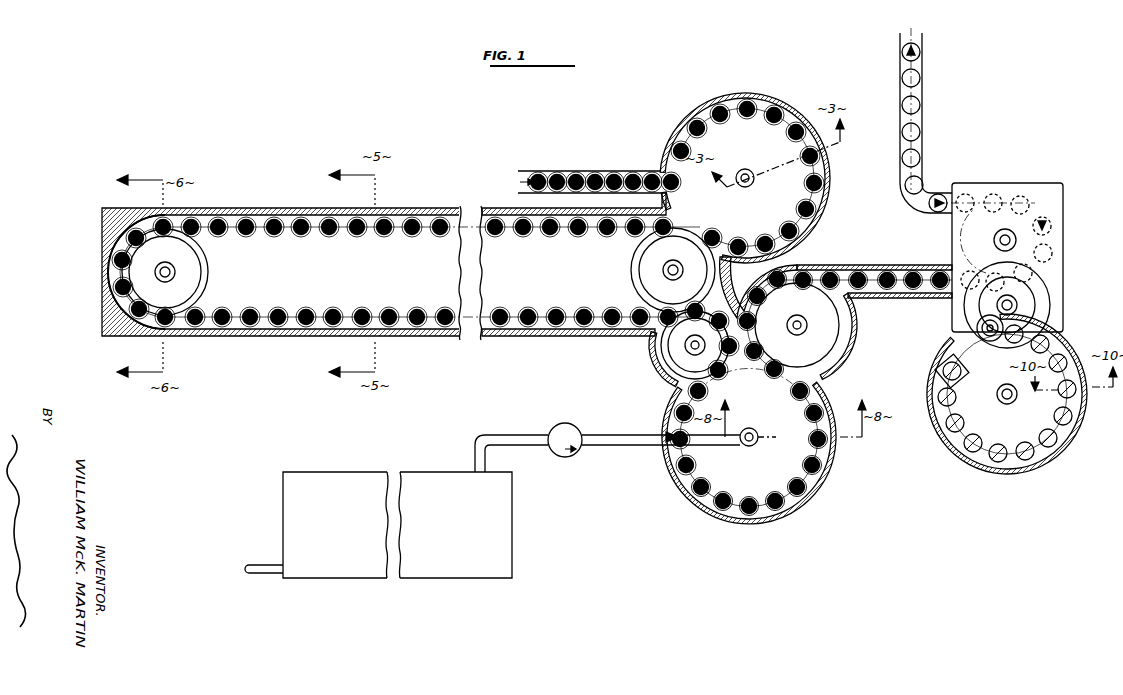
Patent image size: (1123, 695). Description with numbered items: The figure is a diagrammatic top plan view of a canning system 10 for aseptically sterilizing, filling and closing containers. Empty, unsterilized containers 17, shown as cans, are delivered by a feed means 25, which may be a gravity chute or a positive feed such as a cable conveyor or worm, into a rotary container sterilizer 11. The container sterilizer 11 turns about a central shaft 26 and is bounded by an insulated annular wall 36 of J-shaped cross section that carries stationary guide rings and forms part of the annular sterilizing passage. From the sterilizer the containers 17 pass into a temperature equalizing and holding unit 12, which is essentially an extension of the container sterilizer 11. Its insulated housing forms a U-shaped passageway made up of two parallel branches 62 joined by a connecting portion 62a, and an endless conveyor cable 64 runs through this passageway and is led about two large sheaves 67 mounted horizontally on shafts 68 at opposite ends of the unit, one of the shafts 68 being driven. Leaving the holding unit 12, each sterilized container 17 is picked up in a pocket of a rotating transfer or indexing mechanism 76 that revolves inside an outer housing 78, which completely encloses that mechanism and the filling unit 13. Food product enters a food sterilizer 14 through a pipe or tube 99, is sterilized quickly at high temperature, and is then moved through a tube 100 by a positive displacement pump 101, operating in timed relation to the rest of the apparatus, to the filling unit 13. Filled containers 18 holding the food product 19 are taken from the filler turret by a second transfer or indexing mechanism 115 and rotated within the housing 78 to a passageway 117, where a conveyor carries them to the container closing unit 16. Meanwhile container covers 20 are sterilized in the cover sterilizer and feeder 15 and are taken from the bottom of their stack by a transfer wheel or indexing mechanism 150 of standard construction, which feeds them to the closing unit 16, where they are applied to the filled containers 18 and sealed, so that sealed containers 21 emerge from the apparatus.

The canning system 10 is at (956, 112).
The container sterilizer 11 is at (784, 92).
The temperature equalizing and holding unit 12 is at (453, 207).
The filling unit 13 is at (672, 491).
The food sterilizer 14 is at (483, 580).
The cover sterilizer and feeder 15 is at (979, 476).
The container closing unit 16 is at (1057, 180).
The empty containers 17 is at (282, 314).
The filled containers 18 is at (858, 271).
The food product 19 is at (776, 492).
The container covers 20 is at (984, 328).
The sealed containers 21 is at (923, 166).
The feed means 25 is at (622, 169).
The central shaft 26 is at (749, 170).
The insulated annular wall 36 is at (830, 207).
The parallel branches 62 is at (322, 209).
The connecting portion 62a is at (112, 277).
The endless conveyor cable 64 is at (255, 222).
The large sheaves 67 is at (200, 290).
The shafts 68 is at (172, 272).
The transfer or indexing mechanism 76 is at (670, 352).
The outer housing 78 is at (660, 379).
The pipe or tube 99 is at (275, 563).
The tube 100 is at (530, 435).
The pump 101 is at (566, 458).
The transfer or indexing mechanism 115 is at (852, 346).
The passageway 117 is at (871, 298).
The transfer wheel or indexing mechanism 150 is at (1040, 308).